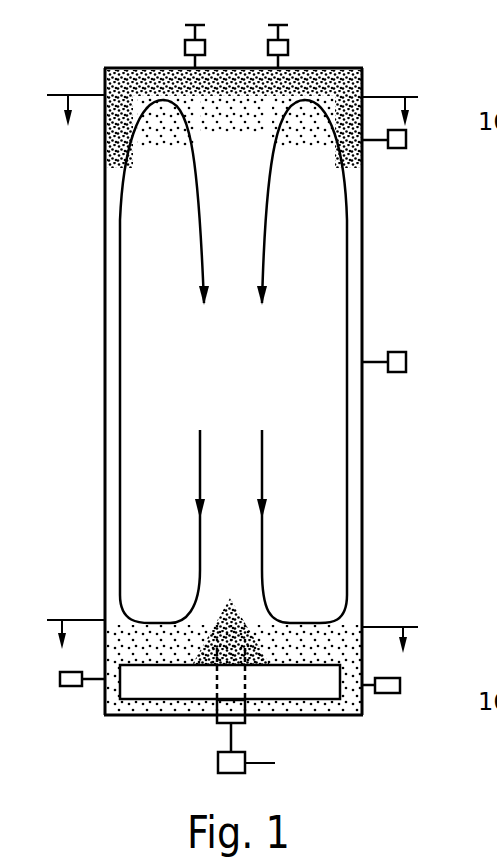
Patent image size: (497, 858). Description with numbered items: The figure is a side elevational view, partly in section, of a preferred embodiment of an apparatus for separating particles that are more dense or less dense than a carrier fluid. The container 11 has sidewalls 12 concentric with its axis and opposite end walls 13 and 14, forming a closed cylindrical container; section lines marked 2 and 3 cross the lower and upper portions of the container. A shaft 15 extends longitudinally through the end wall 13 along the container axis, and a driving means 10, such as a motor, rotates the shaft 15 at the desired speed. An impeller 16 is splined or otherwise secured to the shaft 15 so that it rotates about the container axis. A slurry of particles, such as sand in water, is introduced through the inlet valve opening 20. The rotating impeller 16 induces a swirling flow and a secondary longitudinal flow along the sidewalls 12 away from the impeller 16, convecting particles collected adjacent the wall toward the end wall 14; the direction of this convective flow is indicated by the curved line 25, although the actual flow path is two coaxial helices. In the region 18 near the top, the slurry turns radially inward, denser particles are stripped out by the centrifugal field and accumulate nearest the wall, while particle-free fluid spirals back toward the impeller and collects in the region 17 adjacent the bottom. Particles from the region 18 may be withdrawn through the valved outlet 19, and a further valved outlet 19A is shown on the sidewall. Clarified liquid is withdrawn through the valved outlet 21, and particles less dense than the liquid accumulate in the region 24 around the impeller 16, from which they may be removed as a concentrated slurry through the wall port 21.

The driving means 10 is at (263, 766).
The container 11 is at (92, 456).
The sidewalls 12 is at (106, 400).
The end wall 13 is at (350, 716).
The end wall 14 is at (322, 68).
The shaft 15 is at (247, 720).
The impeller 16 is at (120, 683).
The region 17 is at (101, 651).
The region 18 is at (107, 125).
The valved outlet 19 is at (402, 149).
The sensor probe 19A is at (398, 352).
The inlet valve opening 20 is at (185, 46).
The valved outlet 21 is at (60, 676).
The region 24 is at (200, 652).
The curved line 25 is at (347, 258).
The section line 2- 2 is at (232, 621).
The section line 3- 3 is at (235, 96).